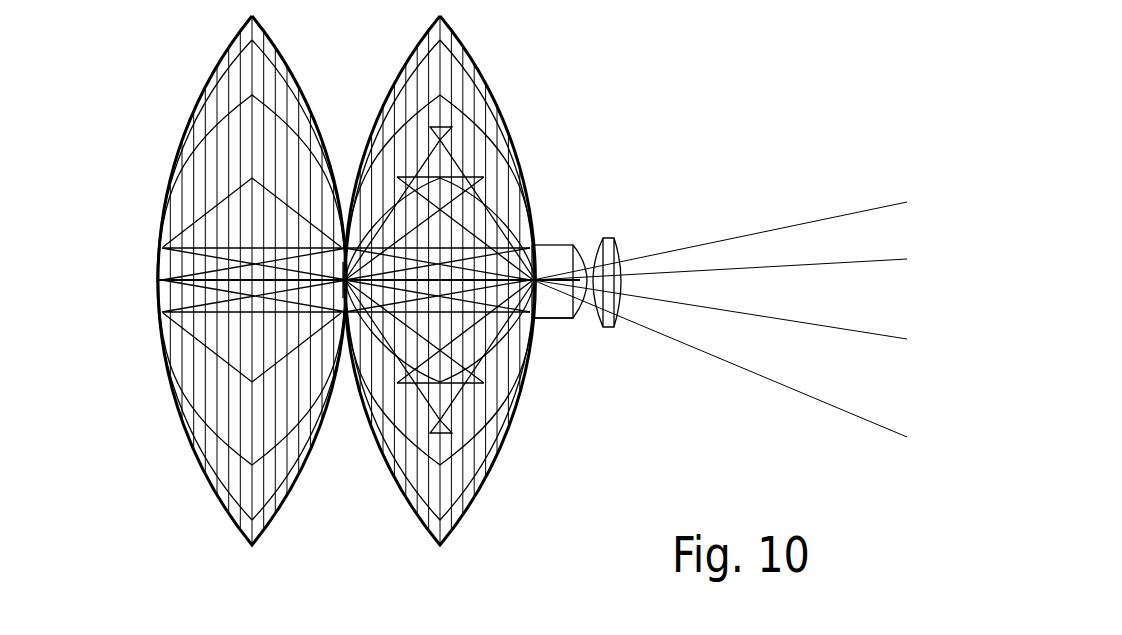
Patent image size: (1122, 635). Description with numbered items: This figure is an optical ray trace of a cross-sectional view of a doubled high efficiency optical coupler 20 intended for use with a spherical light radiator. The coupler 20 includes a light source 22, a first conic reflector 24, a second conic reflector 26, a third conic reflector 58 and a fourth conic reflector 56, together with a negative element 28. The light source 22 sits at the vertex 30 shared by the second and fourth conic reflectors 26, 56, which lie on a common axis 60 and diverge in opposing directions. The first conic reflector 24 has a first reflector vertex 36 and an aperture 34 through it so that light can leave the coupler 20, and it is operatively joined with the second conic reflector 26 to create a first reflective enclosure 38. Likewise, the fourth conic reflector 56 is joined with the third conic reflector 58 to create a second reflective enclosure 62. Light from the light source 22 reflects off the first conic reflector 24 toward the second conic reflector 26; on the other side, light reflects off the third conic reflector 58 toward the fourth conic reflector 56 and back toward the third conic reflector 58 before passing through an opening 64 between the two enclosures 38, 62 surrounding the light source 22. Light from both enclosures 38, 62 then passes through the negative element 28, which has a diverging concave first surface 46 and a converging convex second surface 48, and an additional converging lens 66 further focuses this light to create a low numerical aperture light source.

The high efficiency optical coupler 20 is at (612, 63).
The light source 22 is at (343, 298).
The first conic reflector 24 is at (507, 131).
The second conic reflector 26 is at (398, 78).
The negative element 28 is at (557, 316).
The vertex 30 is at (350, 262).
The aperture 34 is at (536, 330).
The first reflector vertex 36 is at (537, 262).
The first reflective enclosure 38 is at (472, 93).
The first surface 46 is at (538, 258).
The second surface 48 is at (575, 318).
The fourth conic reflector 56 is at (290, 70).
The third conic reflector 58 is at (183, 147).
The common axis 60 is at (215, 280).
The second reflective enclosure 62 is at (225, 98).
The opening 64 is at (347, 283).
The converging lens 66 is at (620, 269).